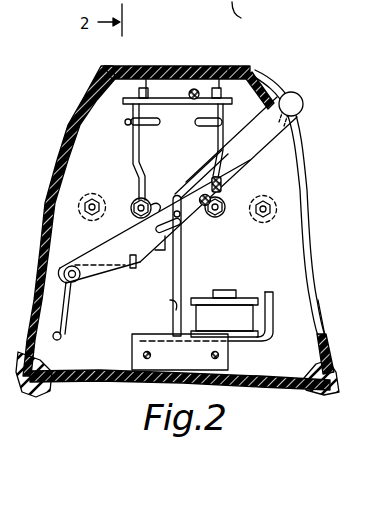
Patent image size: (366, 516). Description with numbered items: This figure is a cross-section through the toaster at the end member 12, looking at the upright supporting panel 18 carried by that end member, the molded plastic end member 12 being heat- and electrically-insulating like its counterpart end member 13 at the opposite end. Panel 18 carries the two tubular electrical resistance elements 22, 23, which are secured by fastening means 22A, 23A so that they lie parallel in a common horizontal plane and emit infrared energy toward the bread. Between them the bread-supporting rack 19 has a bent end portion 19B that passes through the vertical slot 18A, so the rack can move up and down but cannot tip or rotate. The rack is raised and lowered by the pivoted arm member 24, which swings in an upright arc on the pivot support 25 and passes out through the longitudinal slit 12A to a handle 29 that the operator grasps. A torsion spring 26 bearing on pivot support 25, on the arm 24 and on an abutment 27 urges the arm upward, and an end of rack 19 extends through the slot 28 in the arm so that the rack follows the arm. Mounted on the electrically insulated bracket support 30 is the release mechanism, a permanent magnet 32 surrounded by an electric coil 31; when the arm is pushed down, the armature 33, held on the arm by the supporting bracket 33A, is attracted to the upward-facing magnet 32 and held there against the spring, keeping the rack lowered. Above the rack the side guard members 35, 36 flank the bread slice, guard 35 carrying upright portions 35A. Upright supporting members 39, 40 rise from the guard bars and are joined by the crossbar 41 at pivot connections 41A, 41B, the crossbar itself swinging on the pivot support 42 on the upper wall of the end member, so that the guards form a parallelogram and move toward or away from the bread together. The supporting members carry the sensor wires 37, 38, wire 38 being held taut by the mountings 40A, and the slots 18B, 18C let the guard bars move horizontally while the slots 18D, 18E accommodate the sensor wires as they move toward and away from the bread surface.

The end member 12 is at (326, 362).
The longitudinal slit 12A is at (321, 330).
The end member 13 is at (94, 383).
The upright supporting panel 18 is at (308, 236).
The vertical slot 18A is at (170, 300).
The slot 18B is at (137, 67).
The slot 18C is at (231, 70).
The slot 18D is at (156, 246).
The slot 18E is at (202, 230).
The bread-supporting rack 19 is at (184, 240).
The bent end portion 19B is at (149, 152).
The tubular electrical resistance element 22 is at (276, 204).
The fastening means 22A is at (272, 209).
The tubular electrical resistance element 23 is at (78, 200).
The fastening means 23A is at (84, 207).
The pivoted arm member 24 is at (262, 162).
The pivot support 25 is at (64, 273).
The torsion spring 26 is at (68, 324).
The abutment 27 is at (53, 335).
The slot 28 is at (142, 263).
The handle 29 is at (304, 104).
The bracket support 30 is at (132, 352).
The electric coil 31 is at (244, 322).
The permanent magnet 32 is at (234, 290).
The armature 33 is at (197, 127).
The supporting bracket 33A is at (199, 174).
The side guard member 35 is at (210, 143).
The upright portion 35A is at (286, 94).
The side guard member 36 is at (126, 125).
The sensor wire 37 is at (226, 202).
The sensor wire 38 is at (134, 202).
The upright supporting member 39 is at (263, 97).
The upright supporting member 40 is at (123, 106).
The mounting 40A is at (138, 199).
The crossbar 41 is at (158, 98).
The pivot connection 41A is at (258, 84).
The pivot connection 41B is at (110, 72).
The pivot support 42 is at (198, 118).